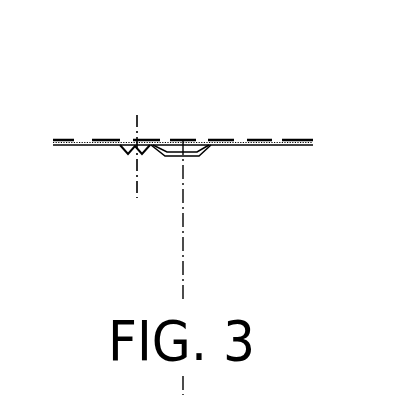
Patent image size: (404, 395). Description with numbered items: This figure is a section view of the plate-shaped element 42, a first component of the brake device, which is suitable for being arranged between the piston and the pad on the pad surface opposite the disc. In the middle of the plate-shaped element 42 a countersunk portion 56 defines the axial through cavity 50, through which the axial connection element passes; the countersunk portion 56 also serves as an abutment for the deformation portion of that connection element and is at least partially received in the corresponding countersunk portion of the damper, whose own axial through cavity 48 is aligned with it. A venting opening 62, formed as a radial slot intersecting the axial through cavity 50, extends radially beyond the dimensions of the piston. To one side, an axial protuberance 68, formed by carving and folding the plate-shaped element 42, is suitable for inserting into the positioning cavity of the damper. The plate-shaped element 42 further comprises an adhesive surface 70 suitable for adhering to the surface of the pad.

The plate-shaped element 42 is at (231, 123).
The axial through cavity 50 is at (195, 155).
The countersunk portion 56 is at (207, 144).
The venting opening 62 is at (276, 139).
The axial protuberance 68 is at (126, 150).
The adhesive surface 70 is at (67, 138).
The axial through cavity 48 is at (360, 390).